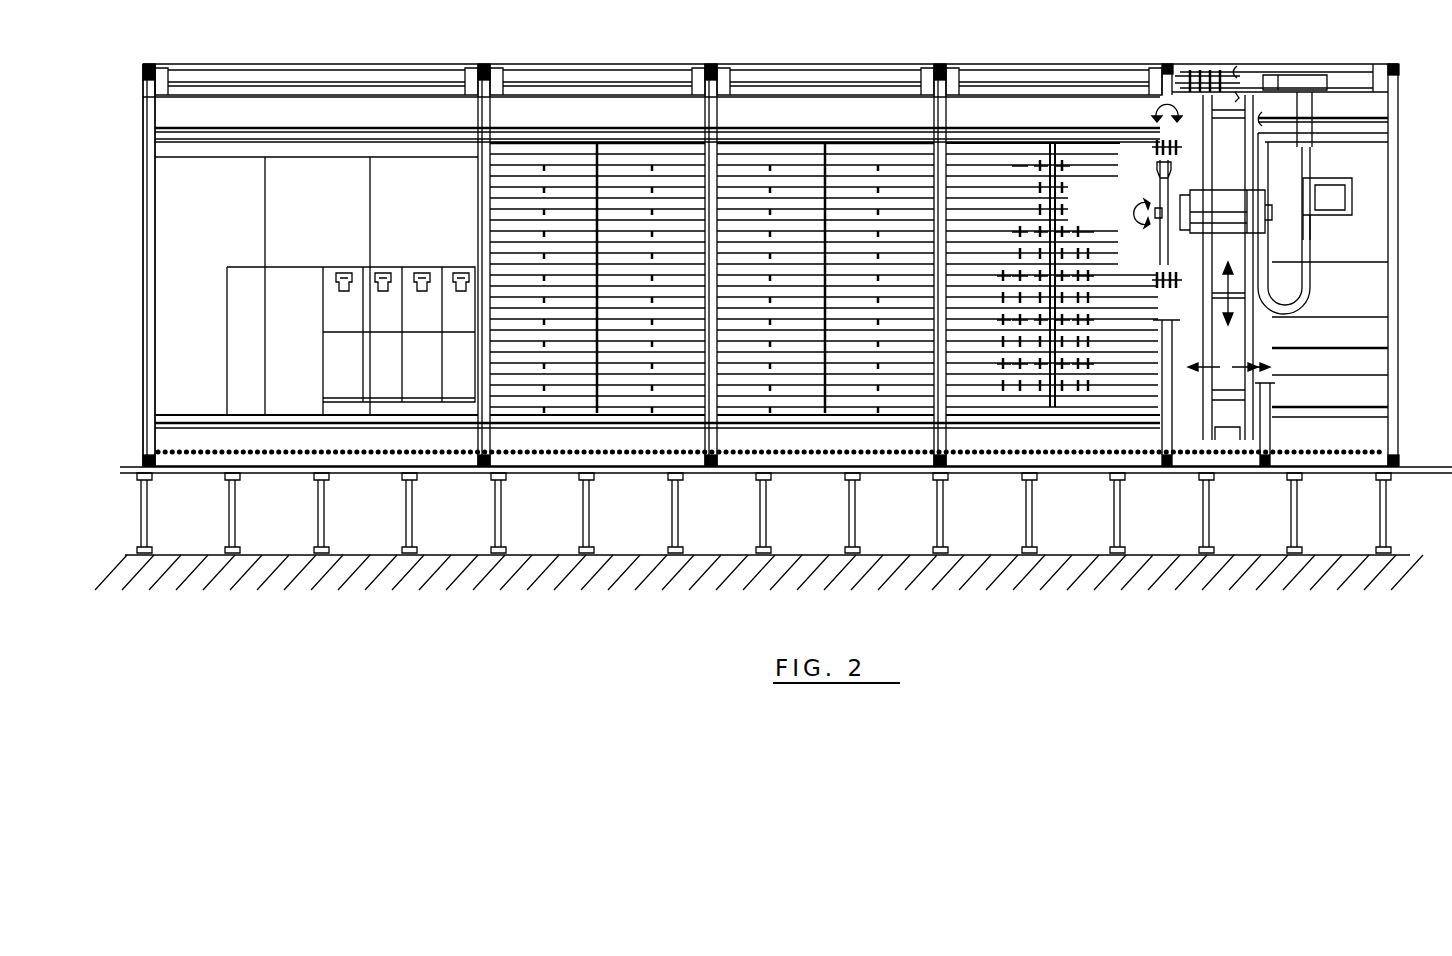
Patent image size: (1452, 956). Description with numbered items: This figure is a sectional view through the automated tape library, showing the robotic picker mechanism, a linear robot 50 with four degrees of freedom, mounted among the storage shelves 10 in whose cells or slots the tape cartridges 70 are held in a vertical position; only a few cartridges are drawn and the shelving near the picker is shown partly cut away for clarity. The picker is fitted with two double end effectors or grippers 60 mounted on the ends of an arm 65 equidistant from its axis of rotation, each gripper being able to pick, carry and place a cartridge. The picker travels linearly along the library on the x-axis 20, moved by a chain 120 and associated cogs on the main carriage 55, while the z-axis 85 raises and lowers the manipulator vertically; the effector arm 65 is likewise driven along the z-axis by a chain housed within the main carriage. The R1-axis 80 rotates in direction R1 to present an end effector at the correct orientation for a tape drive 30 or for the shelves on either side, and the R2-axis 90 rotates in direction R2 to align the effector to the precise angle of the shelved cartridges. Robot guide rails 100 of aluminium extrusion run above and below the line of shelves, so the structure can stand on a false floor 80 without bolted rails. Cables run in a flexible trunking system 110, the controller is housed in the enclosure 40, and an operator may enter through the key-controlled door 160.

The shelves 10 is at (537, 162).
The robot guide rails 100 is at (790, 78).
The cartridge 70 is at (1088, 152).
The double end effectors or grippers 60 is at (1145, 140).
The R2-axis 90 is at (1183, 100).
The R2-axis rotation R2 is at (1154, 108).
The R1-axis rotation R1 is at (1122, 215).
The R1-axis 80 is at (1160, 205).
The arm 65 is at (1200, 212).
The flexible trunking system 110 is at (1312, 242).
The z-axis 85 is at (1247, 297).
The enclosure 40 is at (1358, 322).
The linear robot 50 is at (1232, 347).
The x-axis 20 is at (1265, 384).
The main carriage 55 is at (1228, 418).
The door 160 is at (142, 318).
The chain 120 is at (190, 452).
The tape drive 30 is at (342, 310).